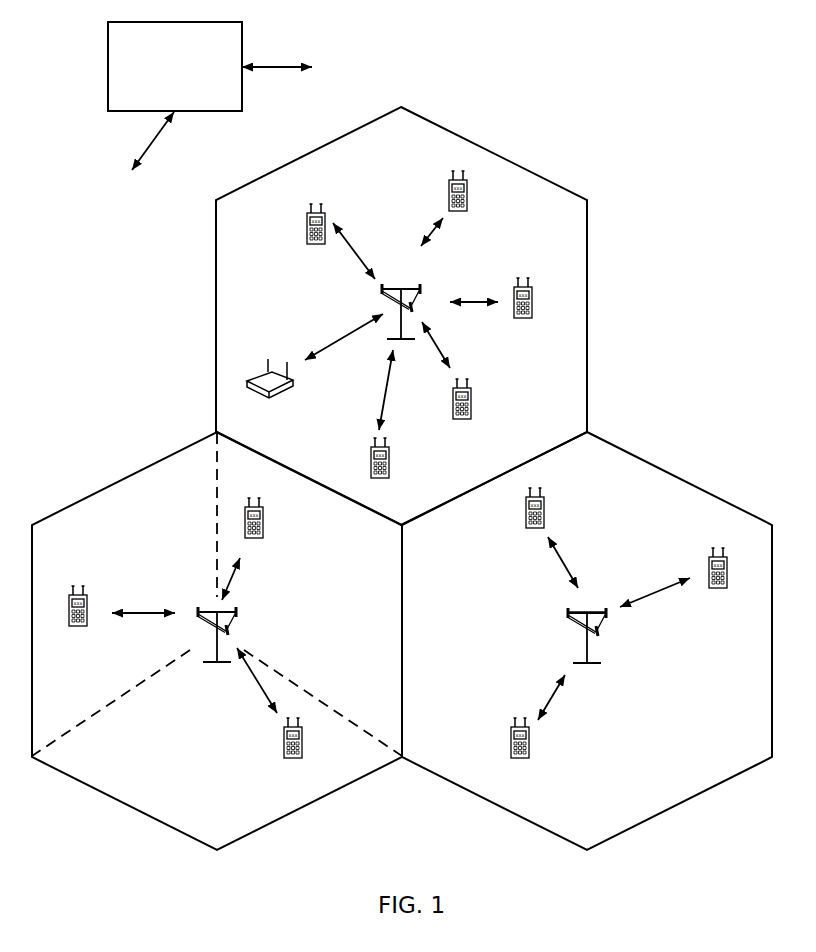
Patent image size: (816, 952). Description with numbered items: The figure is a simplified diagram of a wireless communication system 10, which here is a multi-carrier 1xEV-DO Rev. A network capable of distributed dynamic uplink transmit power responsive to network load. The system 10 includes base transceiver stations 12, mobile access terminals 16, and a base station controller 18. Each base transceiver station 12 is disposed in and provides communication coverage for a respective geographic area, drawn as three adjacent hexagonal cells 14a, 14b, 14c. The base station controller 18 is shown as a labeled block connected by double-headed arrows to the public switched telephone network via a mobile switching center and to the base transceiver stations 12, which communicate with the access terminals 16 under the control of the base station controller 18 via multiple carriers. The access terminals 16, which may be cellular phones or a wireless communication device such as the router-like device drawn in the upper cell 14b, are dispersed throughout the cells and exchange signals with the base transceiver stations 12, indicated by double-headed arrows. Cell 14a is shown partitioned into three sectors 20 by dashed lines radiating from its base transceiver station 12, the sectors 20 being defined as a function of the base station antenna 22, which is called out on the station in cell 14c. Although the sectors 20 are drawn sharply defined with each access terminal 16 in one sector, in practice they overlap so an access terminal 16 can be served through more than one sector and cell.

The wireless communication system 10 is at (678, 96).
The base transceiver station 12 is at (400, 289).
The cell 14a is at (126, 477).
The cell 14b is at (492, 152).
The cell 14c is at (680, 479).
The mobile access terminal 16 is at (307, 222).
The base station controller 18 is at (108, 62).
The sector 20 is at (139, 561).
The base station antenna 22 is at (563, 614).